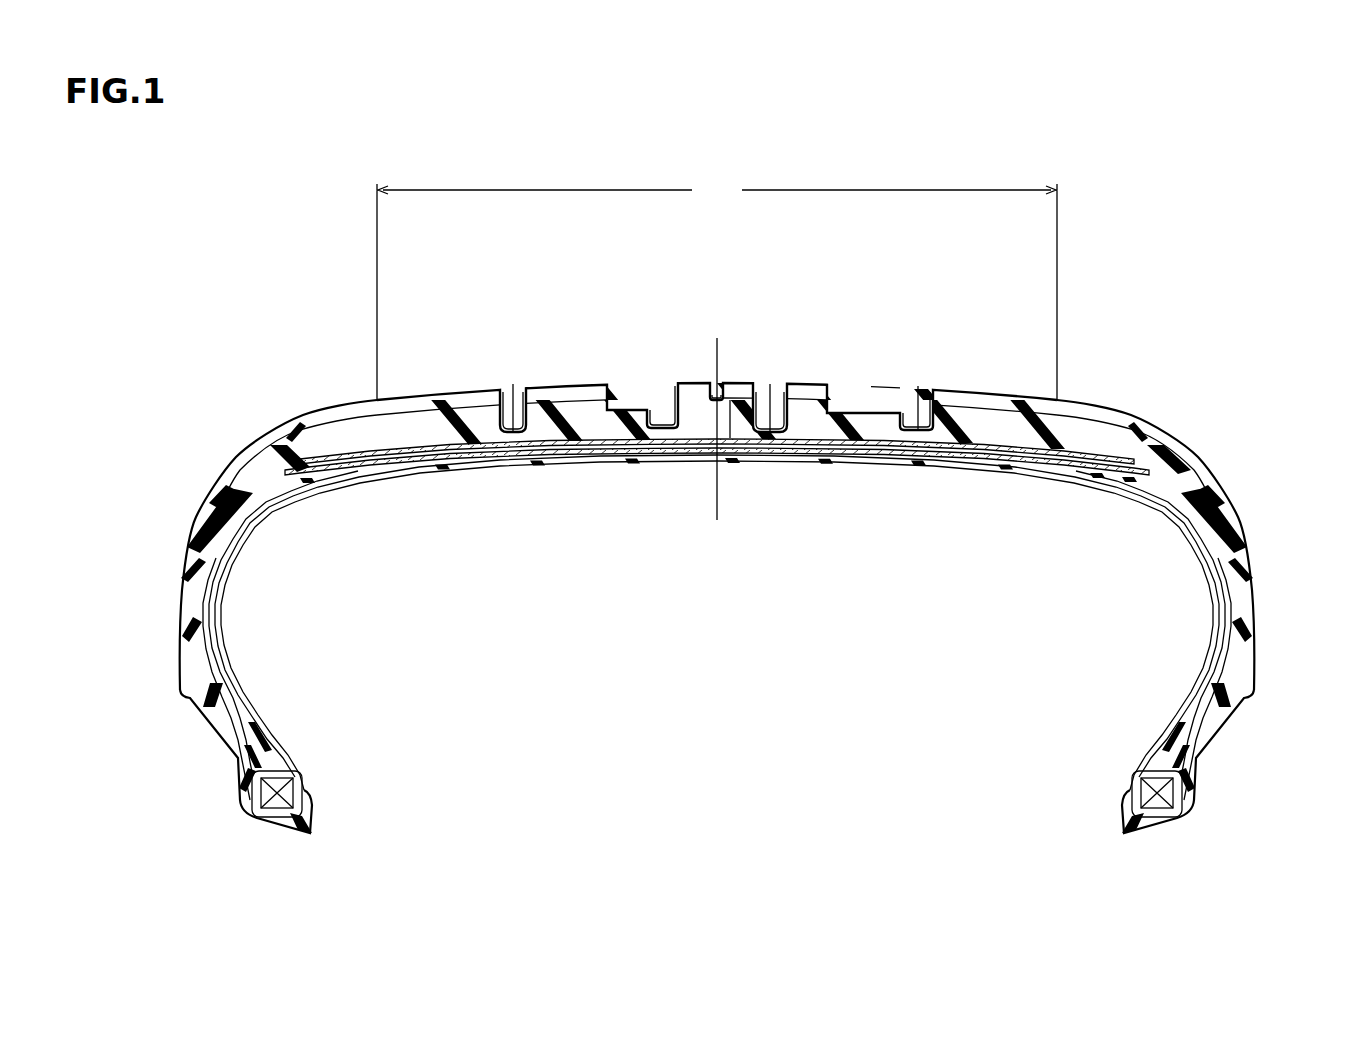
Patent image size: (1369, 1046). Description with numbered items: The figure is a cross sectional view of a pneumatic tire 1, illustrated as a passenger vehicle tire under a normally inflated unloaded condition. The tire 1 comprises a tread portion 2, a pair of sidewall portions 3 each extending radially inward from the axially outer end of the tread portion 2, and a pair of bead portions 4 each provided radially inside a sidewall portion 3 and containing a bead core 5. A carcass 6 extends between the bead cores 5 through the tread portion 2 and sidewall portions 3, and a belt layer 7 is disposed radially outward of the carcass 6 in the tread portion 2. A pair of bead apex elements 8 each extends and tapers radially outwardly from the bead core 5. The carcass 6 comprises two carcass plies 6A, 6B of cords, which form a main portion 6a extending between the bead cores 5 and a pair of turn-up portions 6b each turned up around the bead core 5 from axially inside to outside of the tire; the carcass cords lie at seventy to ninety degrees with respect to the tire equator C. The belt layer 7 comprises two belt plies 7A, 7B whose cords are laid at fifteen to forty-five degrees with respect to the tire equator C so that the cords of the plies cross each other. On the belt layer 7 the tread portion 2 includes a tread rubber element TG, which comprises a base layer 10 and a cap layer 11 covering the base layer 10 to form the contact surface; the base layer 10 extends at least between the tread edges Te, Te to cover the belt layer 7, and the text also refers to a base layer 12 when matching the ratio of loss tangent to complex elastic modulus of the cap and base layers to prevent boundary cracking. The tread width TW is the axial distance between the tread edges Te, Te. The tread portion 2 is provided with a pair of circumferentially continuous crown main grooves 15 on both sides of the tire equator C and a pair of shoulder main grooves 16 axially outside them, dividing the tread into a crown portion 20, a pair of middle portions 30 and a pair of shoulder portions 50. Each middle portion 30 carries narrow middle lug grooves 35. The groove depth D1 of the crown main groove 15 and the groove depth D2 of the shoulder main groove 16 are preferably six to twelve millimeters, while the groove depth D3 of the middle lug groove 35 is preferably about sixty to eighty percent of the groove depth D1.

The pneumatic tire 1 is at (715, 505).
The tread portion 2 is at (978, 400).
The sidewall portion 3 is at (169, 515).
The bead portion 4 is at (204, 758).
The bead core 5 is at (286, 793).
The carcass 6 is at (1042, 541).
The carcass ply 6A is at (1183, 522).
The carcass ply 6B is at (1210, 558).
The main portion 6a is at (1211, 625).
The turn-up portion 6b is at (189, 629).
The belt layer 7 is at (750, 558).
The belt ply 7A is at (800, 447).
The belt ply 7B is at (845, 447).
The bead apex element 8 is at (276, 752).
The base layer 10 is at (474, 410).
The cap layer 11 is at (403, 400).
The base layer 12 is at (553, 403).
The crown main groove 15 is at (664, 391).
The shoulder main groove 16 is at (500, 400).
The crown portion 20 is at (715, 382).
The middle portion 30 is at (588, 388).
The middle lug groove 35 is at (630, 388).
The shoulder portion 50 is at (436, 384).
The tread width TW is at (717, 288).
The tread edge Te is at (376, 398).
The tire equator C is at (714, 413).
The tread rubber element TG is at (730, 400).
The groove depth of crown main groove D1 is at (781, 391).
The groove depth of shoulder main groove D2 is at (517, 388).
The groove depth of middle lug groove D3 is at (900, 425).